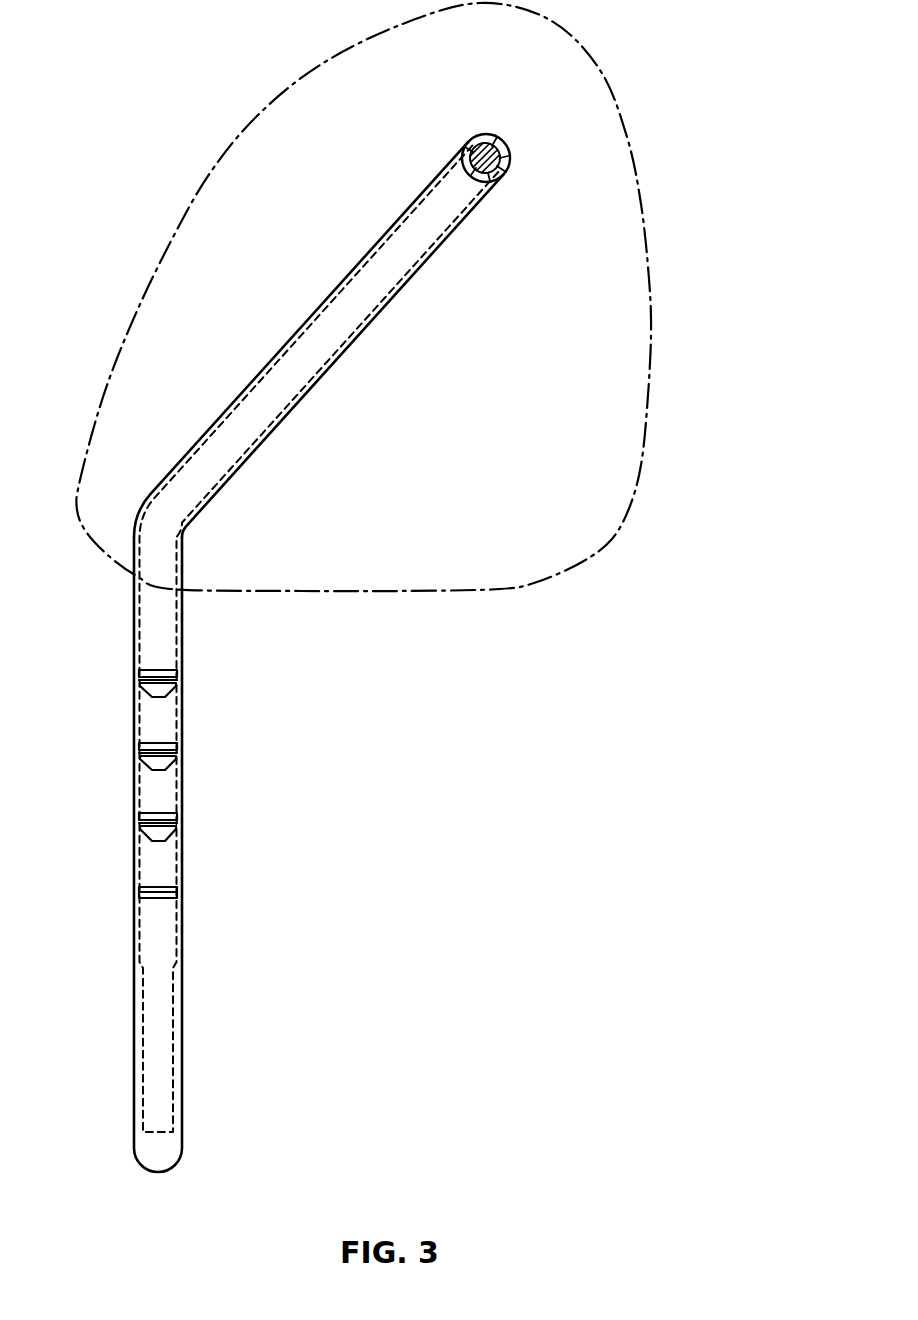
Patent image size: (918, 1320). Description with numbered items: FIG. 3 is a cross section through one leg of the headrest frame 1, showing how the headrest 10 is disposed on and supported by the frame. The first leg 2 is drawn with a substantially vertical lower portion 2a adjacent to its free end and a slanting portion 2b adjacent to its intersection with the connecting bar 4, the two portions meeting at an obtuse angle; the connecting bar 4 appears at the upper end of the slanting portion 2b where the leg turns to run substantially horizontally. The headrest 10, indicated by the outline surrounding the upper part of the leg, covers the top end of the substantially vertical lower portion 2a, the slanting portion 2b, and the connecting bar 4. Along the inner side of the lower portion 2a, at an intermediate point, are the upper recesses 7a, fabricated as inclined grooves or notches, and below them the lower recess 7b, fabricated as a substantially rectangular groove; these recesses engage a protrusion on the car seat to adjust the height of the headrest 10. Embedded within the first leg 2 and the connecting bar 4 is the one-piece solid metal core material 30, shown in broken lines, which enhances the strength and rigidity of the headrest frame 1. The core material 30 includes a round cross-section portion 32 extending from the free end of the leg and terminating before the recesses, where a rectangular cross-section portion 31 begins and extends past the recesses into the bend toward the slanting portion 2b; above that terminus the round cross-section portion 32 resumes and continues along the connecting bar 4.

The headrest frame 1 is at (290, 605).
The first leg 2 is at (271, 657).
The substantially vertical lower portion 2a is at (133, 868).
The slanting portion 2b is at (327, 296).
The connecting bar 4 is at (483, 134).
The upper recesses 7a is at (174, 690).
The lower recess 7b is at (174, 896).
The headrest 10 is at (627, 127).
The core material 30 is at (250, 451).
The rectangular cross-section portion 31 is at (198, 513).
The round cross-section portion 32 is at (390, 290).